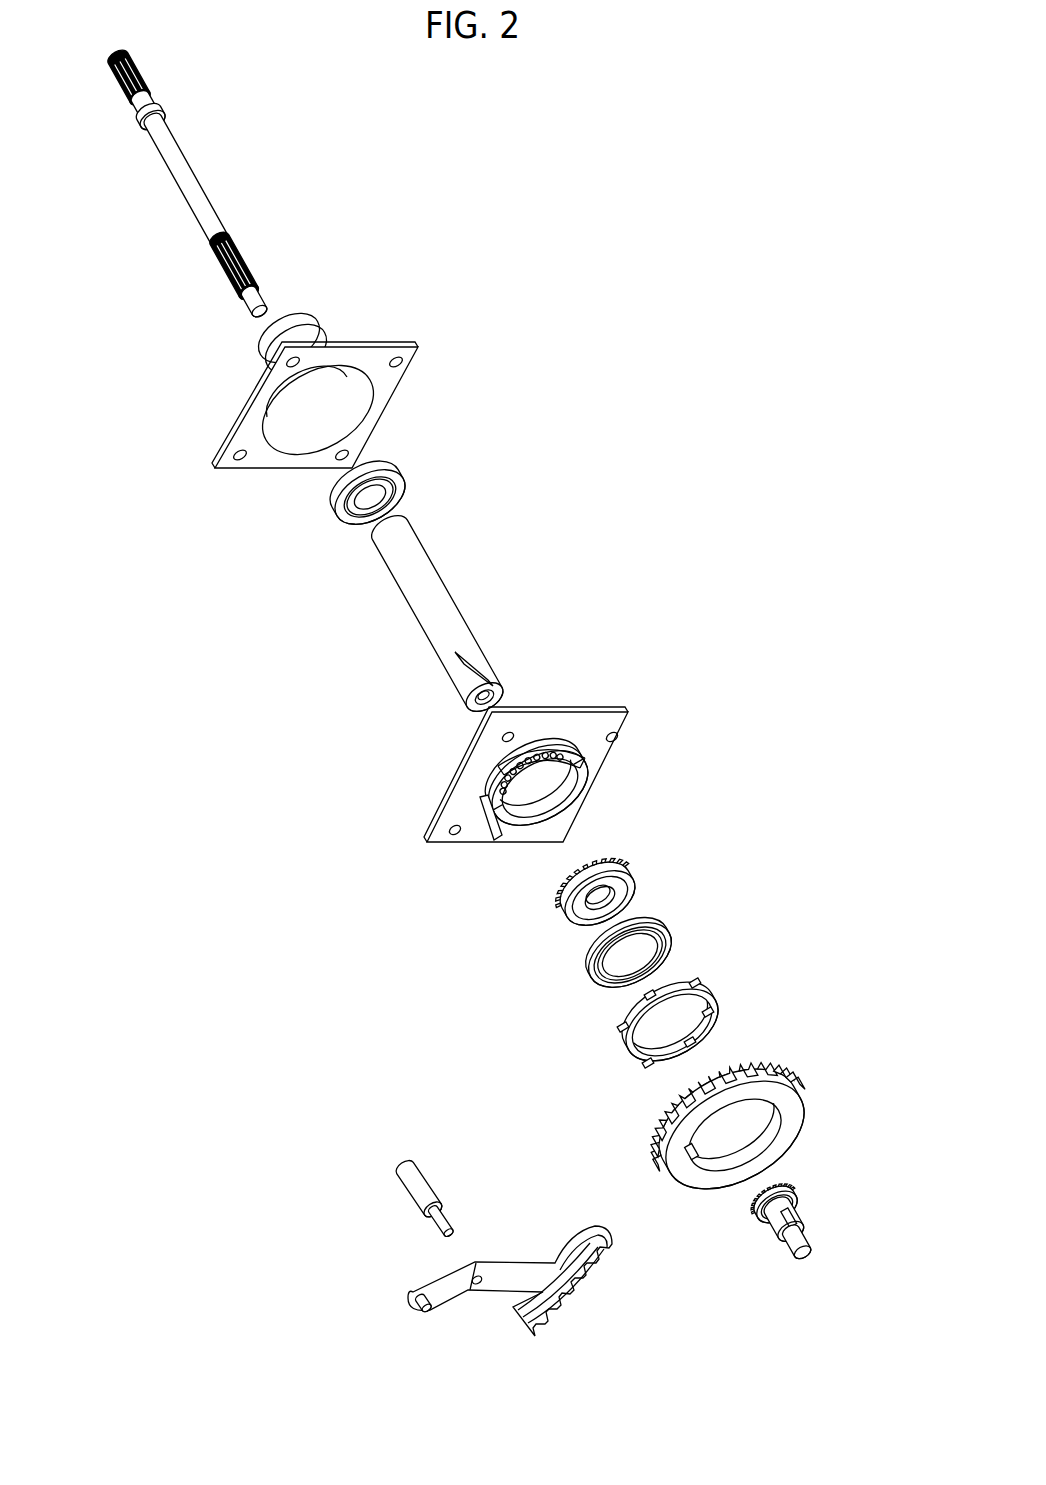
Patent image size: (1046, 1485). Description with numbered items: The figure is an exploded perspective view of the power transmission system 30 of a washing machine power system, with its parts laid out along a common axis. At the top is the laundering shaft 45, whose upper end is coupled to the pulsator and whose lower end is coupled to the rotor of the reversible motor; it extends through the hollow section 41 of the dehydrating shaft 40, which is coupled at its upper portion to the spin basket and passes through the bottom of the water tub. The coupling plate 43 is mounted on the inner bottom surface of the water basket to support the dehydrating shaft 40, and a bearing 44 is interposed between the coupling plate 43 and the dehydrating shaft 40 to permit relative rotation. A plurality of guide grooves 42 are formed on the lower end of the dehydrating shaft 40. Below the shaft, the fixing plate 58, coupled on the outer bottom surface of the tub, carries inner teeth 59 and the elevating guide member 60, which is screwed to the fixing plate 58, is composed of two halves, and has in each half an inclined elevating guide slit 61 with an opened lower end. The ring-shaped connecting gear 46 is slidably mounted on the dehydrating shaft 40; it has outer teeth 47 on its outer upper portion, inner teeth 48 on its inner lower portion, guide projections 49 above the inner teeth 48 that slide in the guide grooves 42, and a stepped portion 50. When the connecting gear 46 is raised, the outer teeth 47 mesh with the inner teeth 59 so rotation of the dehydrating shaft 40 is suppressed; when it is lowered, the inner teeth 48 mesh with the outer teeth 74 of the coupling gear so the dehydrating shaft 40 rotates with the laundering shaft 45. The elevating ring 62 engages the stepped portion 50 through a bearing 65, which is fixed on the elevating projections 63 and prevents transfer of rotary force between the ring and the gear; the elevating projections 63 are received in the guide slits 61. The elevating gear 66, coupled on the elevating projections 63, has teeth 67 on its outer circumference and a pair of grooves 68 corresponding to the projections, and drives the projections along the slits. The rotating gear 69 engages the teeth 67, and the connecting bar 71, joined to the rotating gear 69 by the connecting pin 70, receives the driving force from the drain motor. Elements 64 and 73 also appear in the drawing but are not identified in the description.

The power transmission system 30 is at (221, 881).
The dehydrating shaft 40 is at (430, 572).
The hollow section 41 is at (483, 707).
The guide grooves 42 is at (468, 663).
The coupling plate 43 is at (355, 347).
The bearing 44 is at (385, 470).
The laundering shaft 45 is at (190, 173).
The connecting gear 46 is at (613, 838).
The outer teeth 47 is at (560, 898).
The inner teeth 48 is at (627, 897).
The guide projections 49 is at (603, 907).
The stepped portion 50 is at (628, 870).
The fixing plate 58 is at (578, 690).
The inner teeth 59 is at (497, 793).
The elevating guide member 60 is at (507, 781).
The elevating guide slit 61 is at (504, 770).
The elevating ring 62 is at (703, 970).
The elevating projections 63 is at (702, 985).
The ring 64 is at (625, 1041).
The bearing 65 is at (592, 962).
The elevating gear 66 is at (790, 1097).
The teeth 67 is at (660, 1124).
The grooves 68 is at (700, 1170).
The rotating gear 69 is at (566, 1253).
The connecting pin 70 is at (414, 1193).
The connecting bar 71 is at (452, 1290).
The pinion 73 is at (785, 1208).
The outer teeth 74 is at (790, 1192).